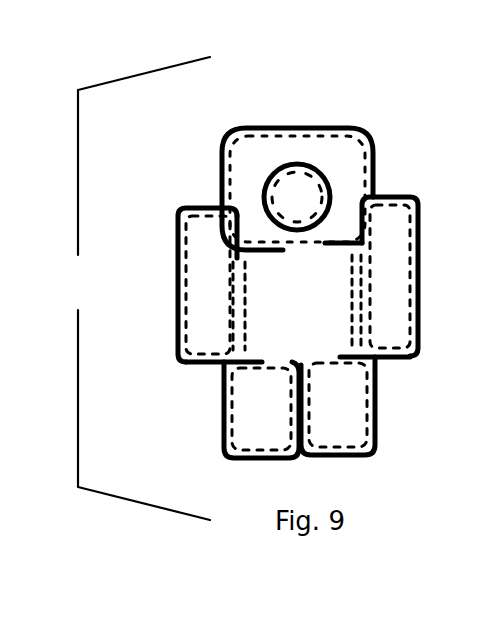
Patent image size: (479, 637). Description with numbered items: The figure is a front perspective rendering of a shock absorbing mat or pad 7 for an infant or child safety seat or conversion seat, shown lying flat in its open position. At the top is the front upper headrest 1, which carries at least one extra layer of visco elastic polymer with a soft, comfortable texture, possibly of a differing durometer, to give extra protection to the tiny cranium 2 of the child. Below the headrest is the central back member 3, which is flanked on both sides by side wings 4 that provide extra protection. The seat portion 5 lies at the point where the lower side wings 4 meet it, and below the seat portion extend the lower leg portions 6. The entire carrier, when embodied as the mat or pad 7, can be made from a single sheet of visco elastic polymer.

The front upper headrest 1 is at (357, 137).
The tiny cranium 2 is at (275, 172).
The central back member 3 is at (298, 281).
The side wings 4 is at (178, 255).
The seat portion 5 is at (297, 355).
The lower leg portions 6 is at (247, 413).
The mat or pad 7 is at (141, 288).